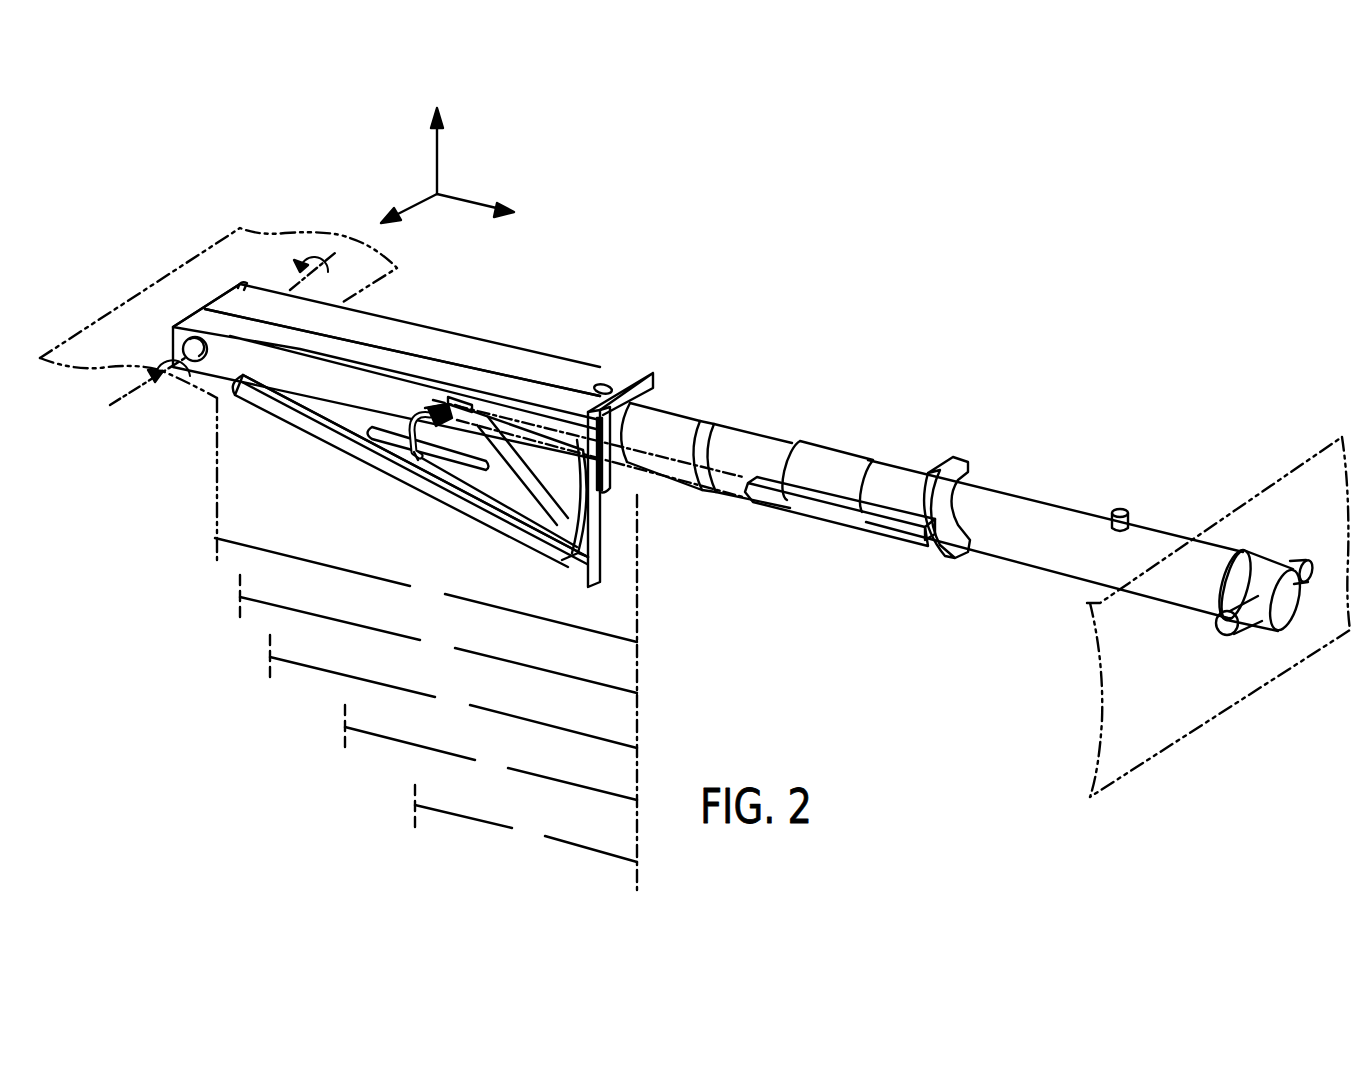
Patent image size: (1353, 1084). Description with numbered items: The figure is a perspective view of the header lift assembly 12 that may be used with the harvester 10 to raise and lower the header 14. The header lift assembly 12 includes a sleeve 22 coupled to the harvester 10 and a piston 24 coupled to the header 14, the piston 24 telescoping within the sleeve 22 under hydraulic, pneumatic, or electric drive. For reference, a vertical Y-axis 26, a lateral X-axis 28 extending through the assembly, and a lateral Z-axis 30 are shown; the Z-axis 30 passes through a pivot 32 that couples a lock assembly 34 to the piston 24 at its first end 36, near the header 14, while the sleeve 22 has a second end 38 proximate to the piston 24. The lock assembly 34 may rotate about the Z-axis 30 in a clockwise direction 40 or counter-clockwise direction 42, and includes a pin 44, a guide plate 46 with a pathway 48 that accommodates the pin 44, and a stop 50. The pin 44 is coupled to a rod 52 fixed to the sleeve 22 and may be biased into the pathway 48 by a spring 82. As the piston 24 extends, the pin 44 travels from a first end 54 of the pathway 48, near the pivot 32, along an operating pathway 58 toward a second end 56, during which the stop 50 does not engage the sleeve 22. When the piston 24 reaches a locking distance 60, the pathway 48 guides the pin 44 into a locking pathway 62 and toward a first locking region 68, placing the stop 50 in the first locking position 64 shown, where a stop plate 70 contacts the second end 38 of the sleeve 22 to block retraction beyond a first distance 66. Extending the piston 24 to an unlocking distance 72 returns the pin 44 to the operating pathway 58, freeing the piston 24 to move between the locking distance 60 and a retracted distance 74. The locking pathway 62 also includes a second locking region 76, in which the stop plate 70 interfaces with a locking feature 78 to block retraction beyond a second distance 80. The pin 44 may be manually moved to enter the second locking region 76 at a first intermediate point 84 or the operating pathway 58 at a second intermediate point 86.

The harvester 10 is at (1326, 514).
The header lift assembly 12 is at (906, 290).
The header 14 is at (256, 269).
The sleeve 22 is at (1035, 500).
The piston 24 is at (648, 386).
The Y-axis 26 is at (440, 160).
The X-axis 28 is at (474, 200).
The Z-axis 30 is at (413, 208).
The pivot 32 is at (183, 345).
The lock assembly 34 is at (310, 447).
The first end of the piston 36 is at (205, 318).
The second end of the sleeve 38 is at (705, 420).
The clockwise direction 40 is at (165, 380).
The counter-clockwise direction 42 is at (318, 245).
The pin 44 is at (418, 412).
The guide plate 46 is at (585, 572).
The pathway 48 is at (308, 413).
The stop 50 is at (573, 374).
The rod 52 is at (800, 510).
The first end of the pathway 54 is at (240, 388).
The second end of the pathway 56 is at (560, 557).
The operating pathway 58 is at (400, 480).
The locking distance 60 is at (426, 590).
The locking pathway 62 is at (567, 522).
The first locking position 64 is at (509, 342).
The first distance 66 is at (453, 691).
The first locking region 68 is at (450, 404).
The stop plate 70 is at (650, 376).
The unlocking distance 72 is at (438, 634).
The retracted distance 74 is at (526, 823).
The second locking region 76 is at (420, 458).
The locking feature 78 is at (840, 452).
The second distance 80 is at (491, 752).
The spring 82 is at (430, 418).
The first intermediate point 84 is at (500, 452).
The second intermediate point 86 is at (447, 490).